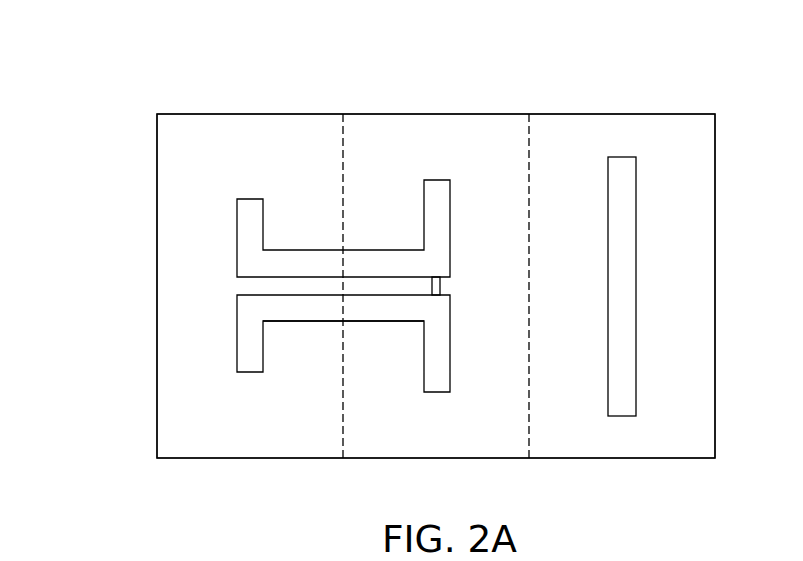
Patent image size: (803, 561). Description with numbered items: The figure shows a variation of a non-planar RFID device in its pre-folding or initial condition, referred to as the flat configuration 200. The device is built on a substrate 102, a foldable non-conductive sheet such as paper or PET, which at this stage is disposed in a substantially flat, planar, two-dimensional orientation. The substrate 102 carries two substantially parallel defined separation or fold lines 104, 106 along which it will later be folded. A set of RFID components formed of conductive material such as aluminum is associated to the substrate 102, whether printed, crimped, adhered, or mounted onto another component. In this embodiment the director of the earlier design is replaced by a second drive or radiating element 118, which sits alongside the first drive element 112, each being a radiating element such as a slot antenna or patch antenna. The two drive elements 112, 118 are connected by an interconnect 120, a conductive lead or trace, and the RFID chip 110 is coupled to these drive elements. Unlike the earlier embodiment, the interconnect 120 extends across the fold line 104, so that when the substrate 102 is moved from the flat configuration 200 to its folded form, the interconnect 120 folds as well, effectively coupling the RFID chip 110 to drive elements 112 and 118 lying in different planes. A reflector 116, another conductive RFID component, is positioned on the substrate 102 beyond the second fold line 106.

The flat configuration 200 is at (384, 229).
The substrate 102 is at (157, 257).
The fold line 104 is at (343, 135).
The fold line 106 is at (529, 135).
The RFID chip 110 is at (440, 286).
The drive element 112 is at (450, 343).
The reflector 116 is at (636, 205).
The second drive element 118 is at (237, 335).
The interconnect 120 is at (300, 321).